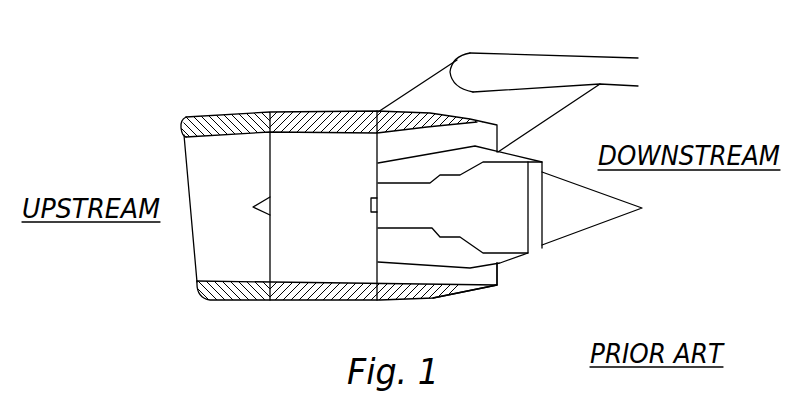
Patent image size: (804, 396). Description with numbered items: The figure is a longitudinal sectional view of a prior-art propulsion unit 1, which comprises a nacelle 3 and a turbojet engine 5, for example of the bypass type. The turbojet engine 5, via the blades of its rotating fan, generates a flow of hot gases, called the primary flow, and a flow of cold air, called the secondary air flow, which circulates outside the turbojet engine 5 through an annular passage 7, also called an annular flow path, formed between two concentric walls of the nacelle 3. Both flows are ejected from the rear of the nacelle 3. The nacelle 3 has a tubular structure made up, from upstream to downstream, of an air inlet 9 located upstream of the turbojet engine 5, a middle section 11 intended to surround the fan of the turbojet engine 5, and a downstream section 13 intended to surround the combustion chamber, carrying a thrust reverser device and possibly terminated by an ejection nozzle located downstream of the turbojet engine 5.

The propulsion unit 1 is at (386, 64).
The nacelle 3 is at (164, 146).
The turbojet engine 5 is at (544, 262).
The annular passage 7 is at (388, 281).
The air inlet 9 is at (215, 114).
The middle section 11 is at (313, 110).
The downstream section 13 is at (430, 299).